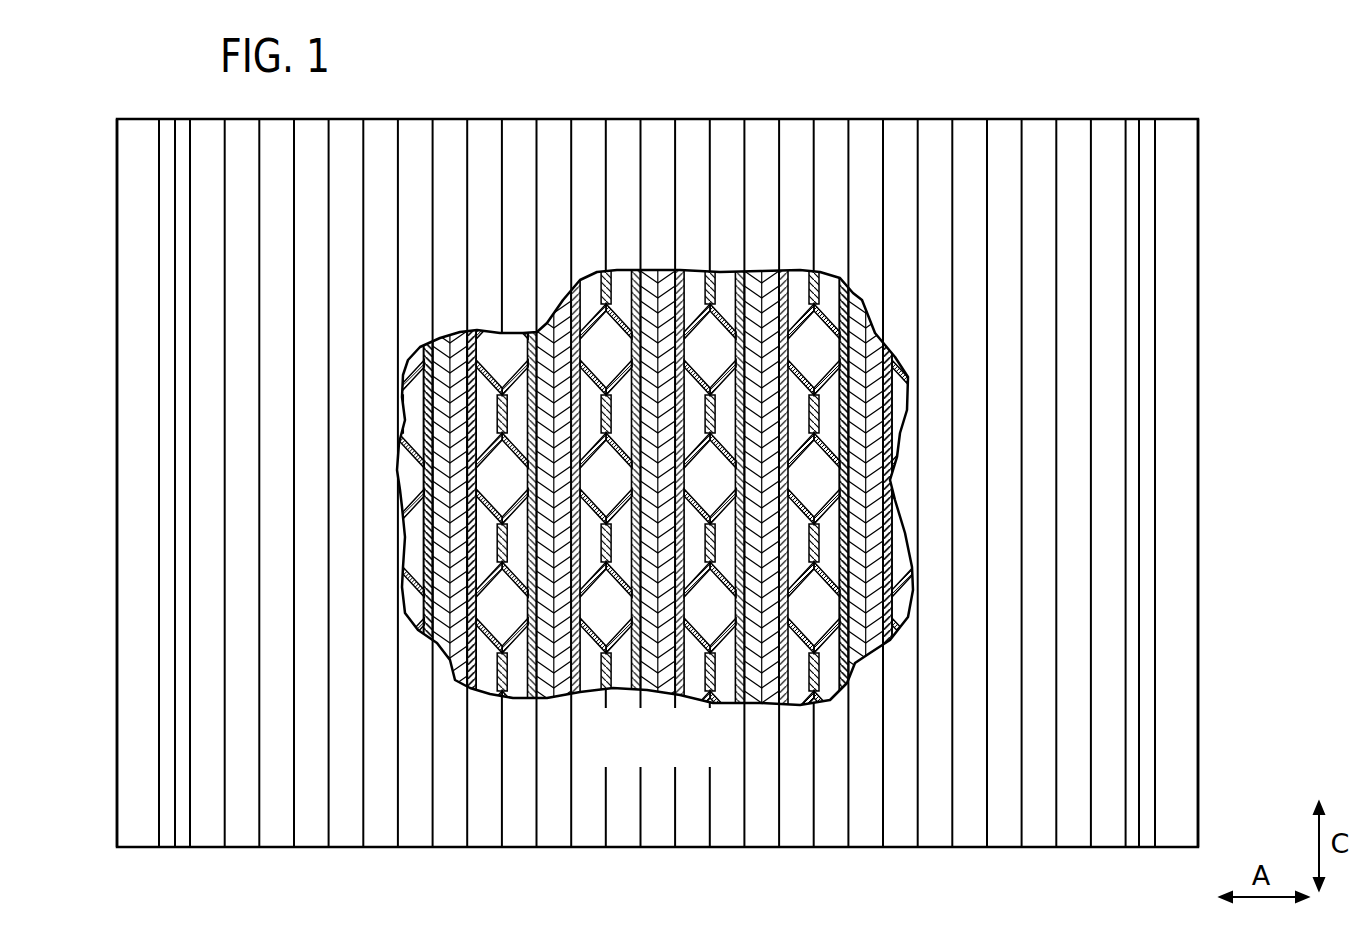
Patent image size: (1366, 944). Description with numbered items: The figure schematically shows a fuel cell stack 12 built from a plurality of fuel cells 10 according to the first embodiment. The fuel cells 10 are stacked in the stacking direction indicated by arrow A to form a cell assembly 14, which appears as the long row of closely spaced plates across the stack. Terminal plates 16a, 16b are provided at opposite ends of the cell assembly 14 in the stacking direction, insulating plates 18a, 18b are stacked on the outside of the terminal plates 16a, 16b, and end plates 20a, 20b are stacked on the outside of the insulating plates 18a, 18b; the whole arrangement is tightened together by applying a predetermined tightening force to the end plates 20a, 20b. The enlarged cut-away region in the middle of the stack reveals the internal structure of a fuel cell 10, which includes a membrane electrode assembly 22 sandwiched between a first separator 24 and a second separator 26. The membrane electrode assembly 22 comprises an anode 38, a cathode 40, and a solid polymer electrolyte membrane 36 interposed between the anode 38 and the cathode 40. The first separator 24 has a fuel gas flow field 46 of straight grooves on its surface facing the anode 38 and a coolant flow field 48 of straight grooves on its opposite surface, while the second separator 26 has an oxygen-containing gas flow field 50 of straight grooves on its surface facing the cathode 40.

The fuel cell 10 is at (662, 115).
The fuel cell stack 12 is at (557, 99).
The cell assembly 14 is at (710, 427).
The terminal plate 16a is at (177, 788).
The terminal plate 16b is at (1133, 803).
The insulating plate 18a is at (165, 761).
The insulating plate 18b is at (1147, 776).
The end plate 20a is at (140, 733).
The end plate 20b is at (1172, 750).
The membrane electrode assembly 22 is at (657, 502).
The first separator 24 is at (606, 459).
The second separator 26 is at (710, 459).
The solid polymer electrolyte membrane 36 is at (658, 689).
The anode 38 is at (638, 689).
The cathode 40 is at (678, 689).
The fuel gas flow field 46 is at (422, 420).
The coolant flow field 48 is at (658, 459).
The oxygen-containing gas flow field 50 is at (482, 548).